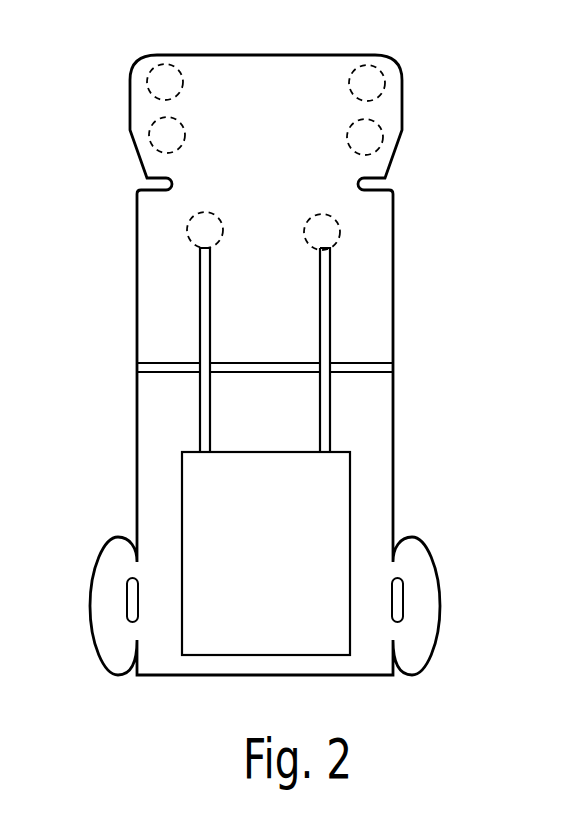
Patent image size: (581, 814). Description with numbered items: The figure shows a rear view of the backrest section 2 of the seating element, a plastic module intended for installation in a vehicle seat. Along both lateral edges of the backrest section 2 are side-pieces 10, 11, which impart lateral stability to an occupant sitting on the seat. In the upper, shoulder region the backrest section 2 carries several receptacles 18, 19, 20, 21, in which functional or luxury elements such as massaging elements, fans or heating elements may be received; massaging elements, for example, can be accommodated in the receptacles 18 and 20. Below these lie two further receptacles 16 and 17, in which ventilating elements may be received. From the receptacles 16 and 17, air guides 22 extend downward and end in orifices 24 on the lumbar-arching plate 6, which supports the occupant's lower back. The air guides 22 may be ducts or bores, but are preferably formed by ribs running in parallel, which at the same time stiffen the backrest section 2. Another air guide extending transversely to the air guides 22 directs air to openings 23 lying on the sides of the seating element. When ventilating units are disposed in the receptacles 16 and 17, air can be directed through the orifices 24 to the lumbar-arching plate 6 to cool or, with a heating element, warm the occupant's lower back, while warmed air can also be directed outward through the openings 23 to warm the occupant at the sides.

The backrest section 2 is at (460, 308).
The lumbar-arching plate 6 is at (277, 568).
The side-piece 10 is at (90, 606).
The side-piece 11 is at (442, 605).
The receptacle 16 is at (187, 232).
The receptacle 17 is at (340, 230).
The receptacle 18 is at (152, 143).
The receptacle 19 is at (151, 89).
The receptacle 20 is at (381, 145).
The receptacle 21 is at (382, 90).
The air guides 22 is at (320, 305).
The openings 23 is at (137, 363).
The orifices 24 is at (320, 450).